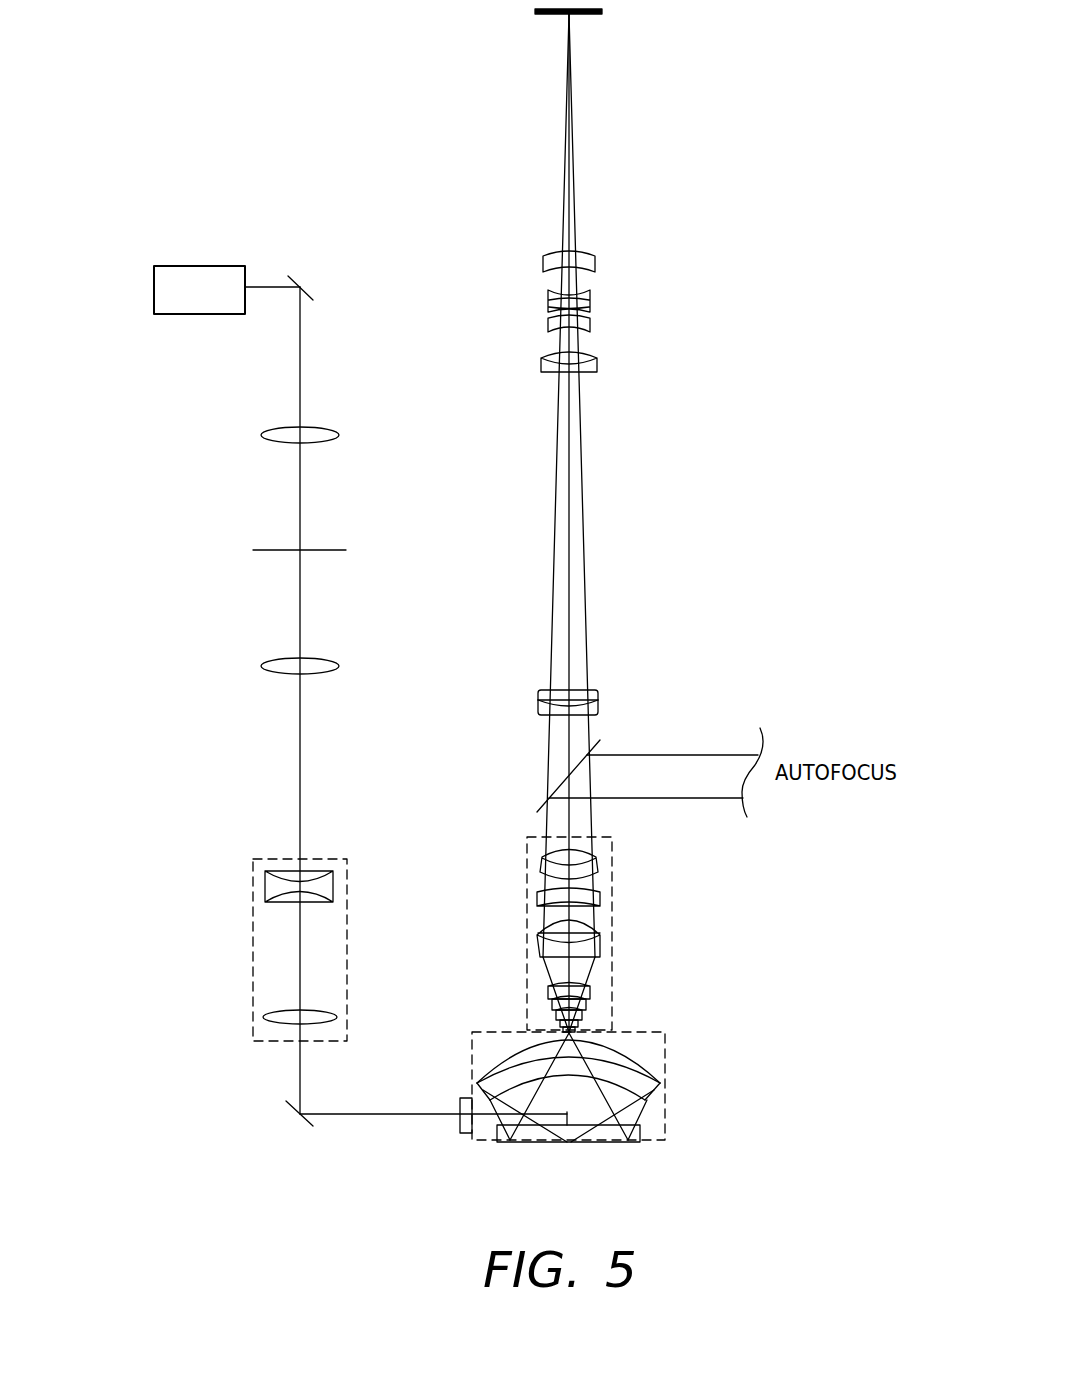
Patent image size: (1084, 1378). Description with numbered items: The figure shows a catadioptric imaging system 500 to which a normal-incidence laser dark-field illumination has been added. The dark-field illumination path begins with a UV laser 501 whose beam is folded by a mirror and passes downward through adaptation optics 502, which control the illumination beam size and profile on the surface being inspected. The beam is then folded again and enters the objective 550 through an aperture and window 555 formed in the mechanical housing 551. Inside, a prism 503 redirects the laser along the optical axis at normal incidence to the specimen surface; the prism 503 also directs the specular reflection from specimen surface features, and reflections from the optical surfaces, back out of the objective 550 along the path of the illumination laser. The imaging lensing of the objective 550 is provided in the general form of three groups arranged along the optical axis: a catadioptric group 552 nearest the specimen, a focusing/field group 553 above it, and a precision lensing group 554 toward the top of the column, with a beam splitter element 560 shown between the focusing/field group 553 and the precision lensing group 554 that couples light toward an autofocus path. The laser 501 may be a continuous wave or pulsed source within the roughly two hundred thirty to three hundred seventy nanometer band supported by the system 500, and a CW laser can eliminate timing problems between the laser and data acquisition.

The catadioptric imaging system 500 is at (265, 158).
The UV laser 501 is at (154, 290).
The adaptation optics 502 is at (231, 402).
The prism 503 is at (567, 1125).
The objective 550 is at (634, 715).
The mechanical housing 551 is at (482, 1032).
The catadioptric group 552 is at (631, 1080).
The focusing/field group 553 is at (526, 937).
The precision lensing group 554 is at (600, 232).
The aperture and window 555 is at (460, 1098).
The beam splitter 560 is at (553, 793).